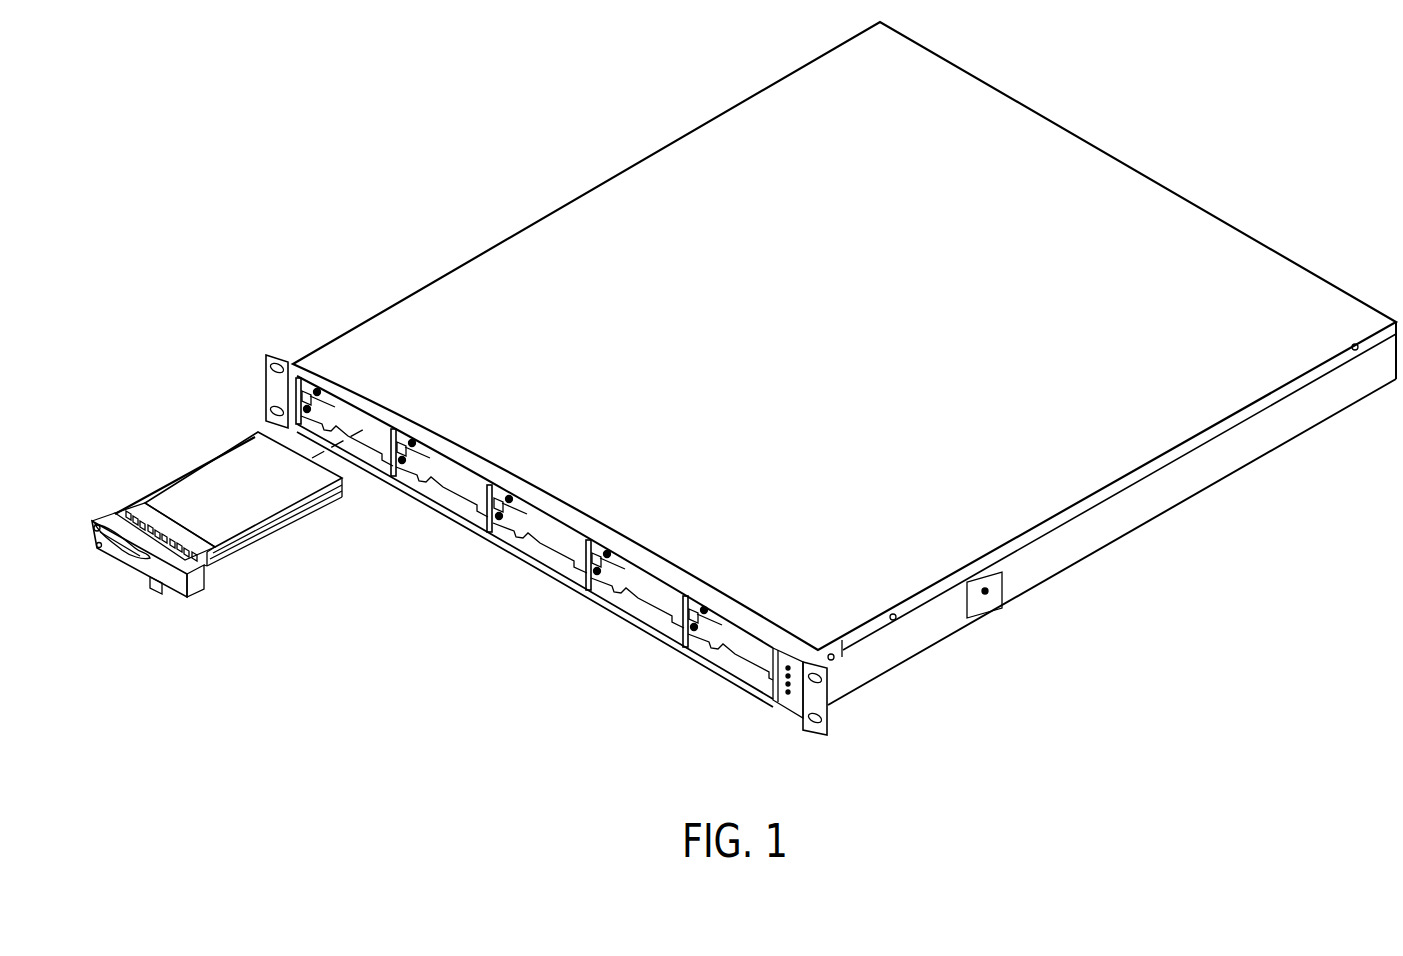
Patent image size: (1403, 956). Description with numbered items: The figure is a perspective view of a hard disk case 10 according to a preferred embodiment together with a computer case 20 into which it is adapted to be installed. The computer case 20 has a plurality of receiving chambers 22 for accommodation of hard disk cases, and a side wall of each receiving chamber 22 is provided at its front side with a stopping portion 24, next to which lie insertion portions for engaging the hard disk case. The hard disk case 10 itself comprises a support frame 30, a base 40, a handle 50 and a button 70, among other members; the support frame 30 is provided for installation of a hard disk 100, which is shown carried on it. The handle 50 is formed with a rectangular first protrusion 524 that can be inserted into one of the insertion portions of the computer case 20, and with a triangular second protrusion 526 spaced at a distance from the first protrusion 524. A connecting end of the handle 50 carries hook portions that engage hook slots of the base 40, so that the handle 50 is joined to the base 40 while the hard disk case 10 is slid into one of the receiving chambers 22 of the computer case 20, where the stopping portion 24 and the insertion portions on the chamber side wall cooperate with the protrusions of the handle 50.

The hard disk case 10 is at (204, 533).
The computer case 20 is at (794, 396).
The receiving chamber 22 is at (370, 435).
The stopping portion 24 is at (296, 392).
The support frame 30 is at (238, 588).
The base 40 is at (189, 610).
The handle 50 is at (121, 543).
The button 70 is at (157, 608).
The hard disk 100 is at (272, 500).
The first protrusion 524 is at (95, 520).
The second protrusion 526 is at (90, 546).